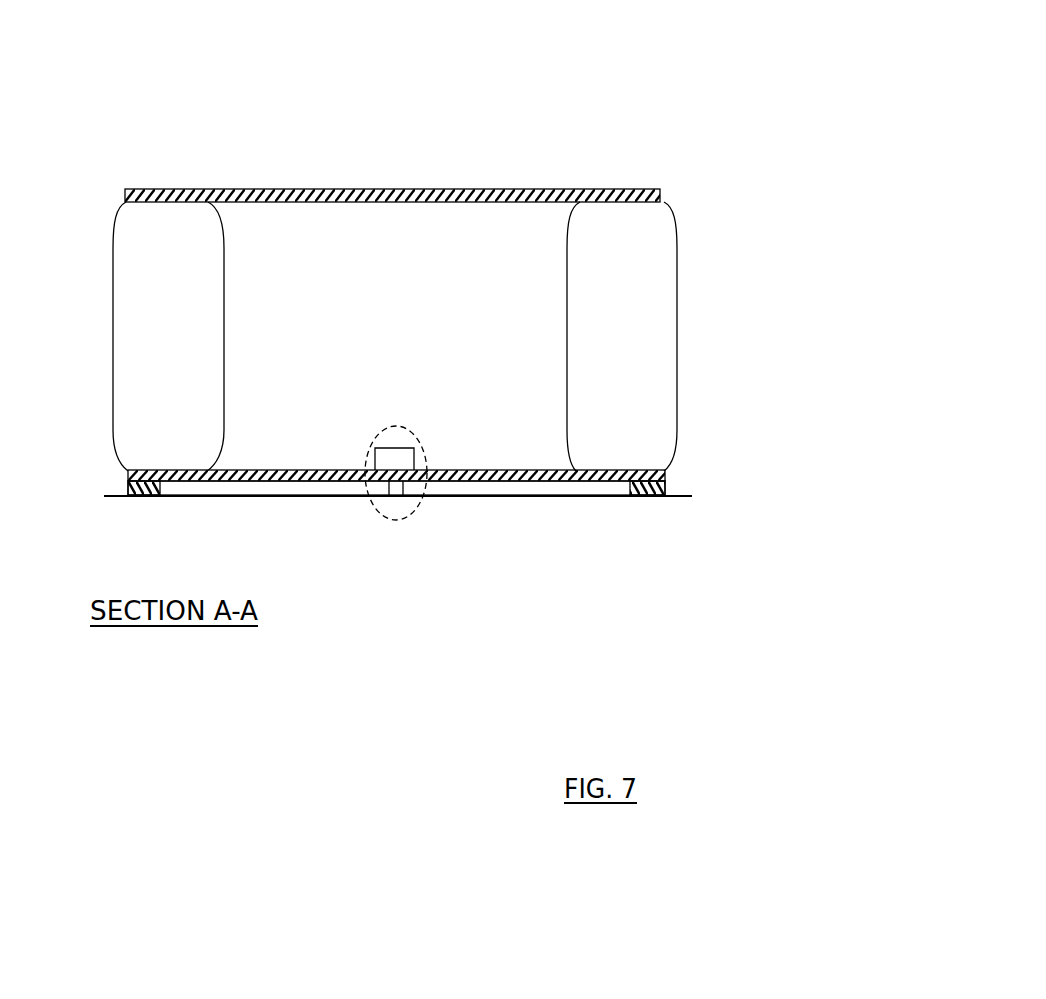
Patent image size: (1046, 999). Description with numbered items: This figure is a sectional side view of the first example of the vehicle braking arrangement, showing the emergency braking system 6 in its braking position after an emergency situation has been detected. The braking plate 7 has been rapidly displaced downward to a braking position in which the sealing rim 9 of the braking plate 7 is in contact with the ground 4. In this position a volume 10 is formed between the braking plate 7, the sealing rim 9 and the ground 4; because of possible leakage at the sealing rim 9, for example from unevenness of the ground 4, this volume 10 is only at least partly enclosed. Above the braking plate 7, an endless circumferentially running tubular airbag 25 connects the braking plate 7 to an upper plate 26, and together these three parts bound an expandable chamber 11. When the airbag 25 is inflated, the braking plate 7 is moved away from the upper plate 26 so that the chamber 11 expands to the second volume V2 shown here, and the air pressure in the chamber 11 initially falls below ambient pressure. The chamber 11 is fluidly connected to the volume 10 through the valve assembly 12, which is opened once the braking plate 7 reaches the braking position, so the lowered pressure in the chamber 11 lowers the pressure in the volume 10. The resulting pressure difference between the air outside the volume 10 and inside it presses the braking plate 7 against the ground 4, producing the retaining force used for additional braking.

The emergency braking system 6 is at (341, 130).
The second volume V2 is at (322, 220).
The upper plate 26 is at (545, 188).
The tubular airbag 25 is at (626, 260).
The expandable chamber 11 is at (350, 352).
The braking plate 7 is at (128, 472).
The sealing rim 9 is at (665, 484).
The volume 10 is at (498, 488).
The ground 4 is at (457, 495).
The valve assembly 12 is at (247, 487).